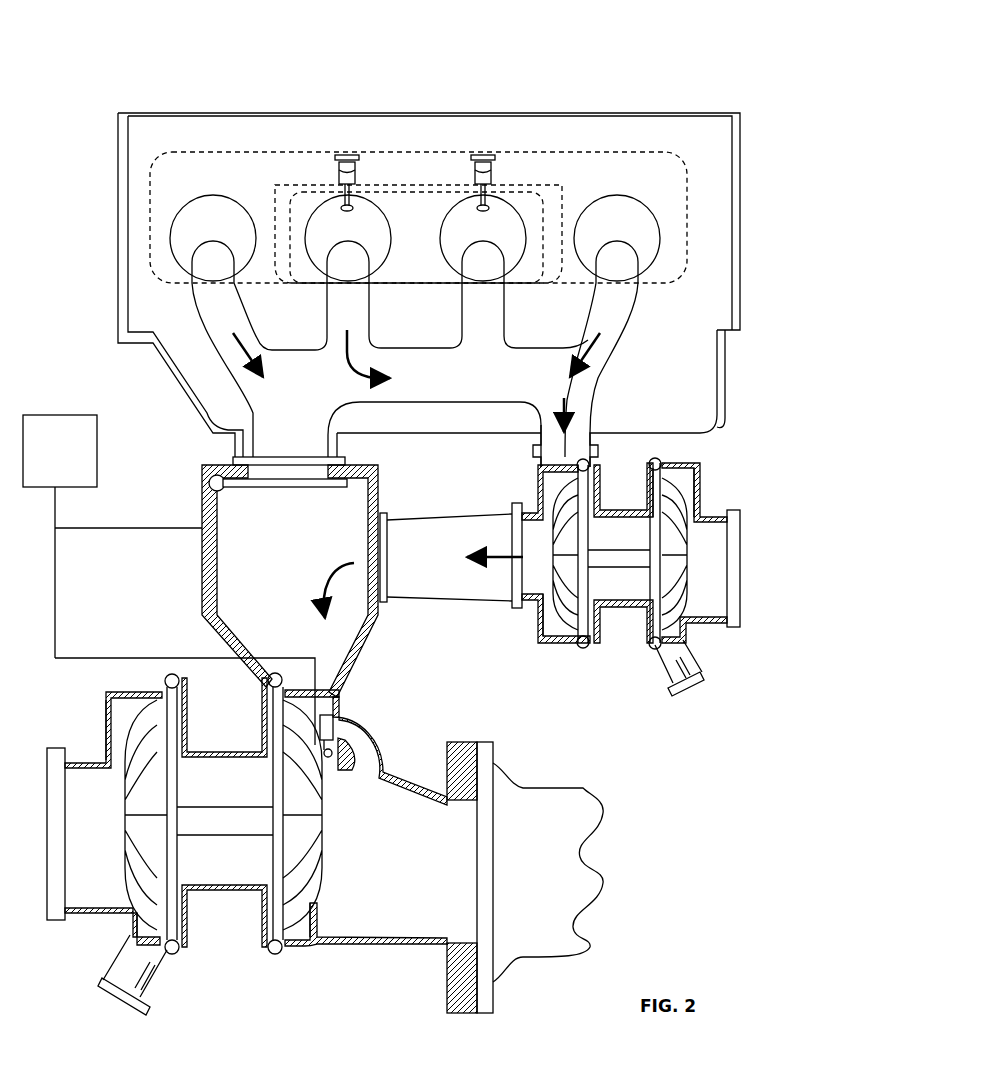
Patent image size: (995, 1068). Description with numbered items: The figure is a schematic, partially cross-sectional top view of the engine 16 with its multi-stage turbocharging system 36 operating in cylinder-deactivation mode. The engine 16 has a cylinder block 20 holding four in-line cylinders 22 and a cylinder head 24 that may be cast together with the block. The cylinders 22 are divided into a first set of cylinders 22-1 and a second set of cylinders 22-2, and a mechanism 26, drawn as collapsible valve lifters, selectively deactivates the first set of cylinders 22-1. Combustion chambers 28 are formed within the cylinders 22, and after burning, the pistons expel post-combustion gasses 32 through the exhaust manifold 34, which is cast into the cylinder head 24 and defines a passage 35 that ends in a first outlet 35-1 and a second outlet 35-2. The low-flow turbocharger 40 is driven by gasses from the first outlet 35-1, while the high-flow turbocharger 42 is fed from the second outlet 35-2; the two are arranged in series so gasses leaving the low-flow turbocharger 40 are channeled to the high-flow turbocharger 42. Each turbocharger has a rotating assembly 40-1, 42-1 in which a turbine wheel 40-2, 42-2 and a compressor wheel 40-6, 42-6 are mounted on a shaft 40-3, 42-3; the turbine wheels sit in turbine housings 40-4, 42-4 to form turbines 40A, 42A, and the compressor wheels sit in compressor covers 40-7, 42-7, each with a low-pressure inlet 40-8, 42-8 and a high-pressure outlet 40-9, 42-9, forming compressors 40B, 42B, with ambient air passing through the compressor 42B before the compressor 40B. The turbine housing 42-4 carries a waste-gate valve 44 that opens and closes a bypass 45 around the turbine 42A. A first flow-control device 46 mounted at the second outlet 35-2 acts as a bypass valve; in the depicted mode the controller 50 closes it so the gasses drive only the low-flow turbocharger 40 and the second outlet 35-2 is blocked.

The engine 16 is at (677, 82).
The cylinder block 20 is at (740, 293).
The cylinders 22 is at (233, 200).
The first set of cylinders 22-1 is at (292, 208).
The second set of cylinders 22-2 is at (567, 208).
The cylinder head 24 is at (745, 205).
The mechanism 26 is at (483, 153).
The combustion chambers 28 is at (188, 218).
The post-combustion gasses 32 is at (350, 353).
The exhaust manifold 34 is at (638, 292).
The passage 35 is at (448, 395).
The first outlet 35-1 is at (580, 397).
The second outlet 35-2 is at (287, 447).
The turbocharging system 36 is at (652, 782).
The low-flow turbocharger 40 is at (605, 478).
The turbine 40A is at (556, 500).
The compressor 40B is at (695, 585).
The rotating assembly 40-1 is at (633, 583).
The turbine wheel 40-2 is at (567, 603).
The shaft 40-3 is at (633, 553).
The turbine housing 40-4 is at (600, 488).
The compressor wheel 40-6 is at (680, 550).
The compressor cover 40-7 is at (690, 650).
The inlet 40-8 is at (740, 540).
The outlet 40-9 is at (700, 683).
The high-flow turbocharger 42 is at (500, 750).
The turbine 42A is at (328, 858).
The compressor 42B is at (117, 803).
The rotating assembly 42-1 is at (218, 840).
The turbine wheel 42-2 is at (320, 825).
The shaft 42-3 is at (192, 815).
The turbine housing 42-4 is at (300, 937).
The compressor wheel 42-6 is at (133, 875).
The compressor cover 42-7 is at (123, 723).
The inlet 42-8 is at (47, 872).
The outlet 42-9 is at (125, 1000).
The waste-gate valve 44 is at (342, 730).
The bypass 45 is at (367, 750).
The first flow-control device 46 is at (333, 492).
The controller 50 is at (71, 459).